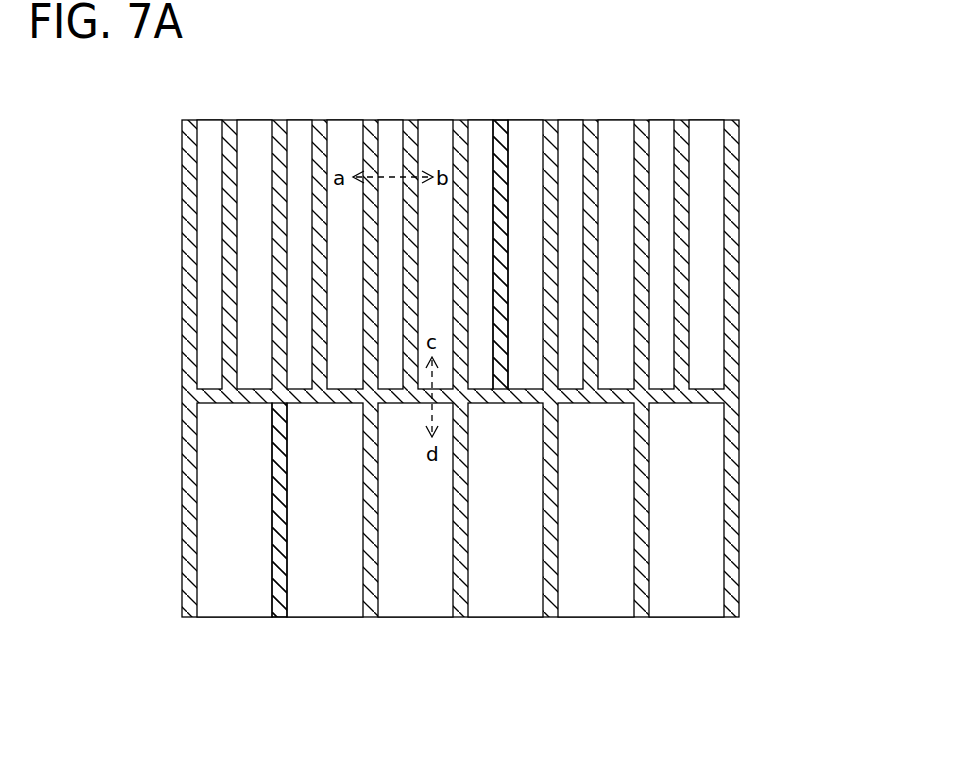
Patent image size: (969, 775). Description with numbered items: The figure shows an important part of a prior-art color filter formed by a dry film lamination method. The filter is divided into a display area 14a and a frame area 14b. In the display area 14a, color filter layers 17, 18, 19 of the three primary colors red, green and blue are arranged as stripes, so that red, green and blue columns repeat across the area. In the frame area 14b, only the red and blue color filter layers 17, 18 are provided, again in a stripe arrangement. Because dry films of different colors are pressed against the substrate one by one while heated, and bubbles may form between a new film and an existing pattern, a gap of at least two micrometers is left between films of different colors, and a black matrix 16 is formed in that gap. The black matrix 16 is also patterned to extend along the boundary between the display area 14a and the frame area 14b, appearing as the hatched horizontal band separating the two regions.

The display area 14a is at (758, 393).
The frame area 14b is at (758, 120).
The black matrix 16 is at (498, 118).
The red color filter layer 17 is at (567, 118).
The blue color filter layer 18 is at (700, 118).
The green color filter layer 19 is at (605, 618).